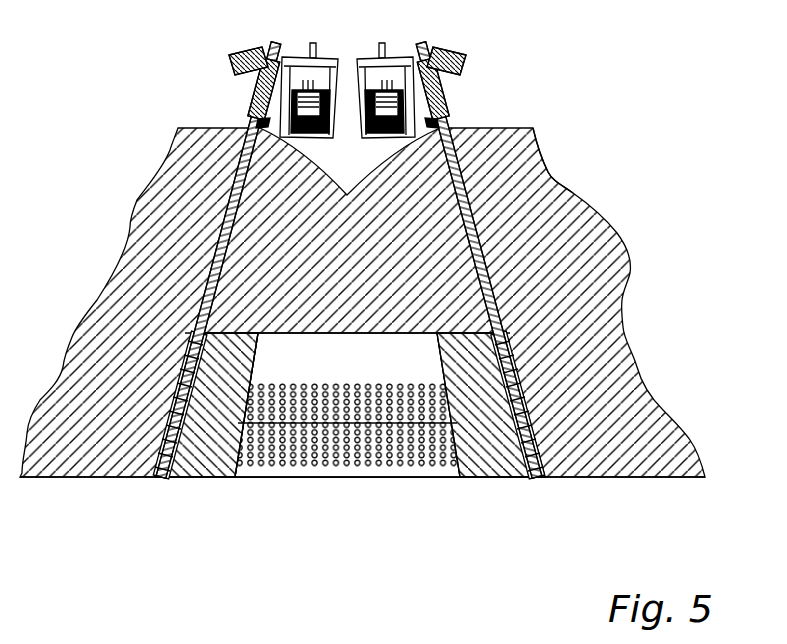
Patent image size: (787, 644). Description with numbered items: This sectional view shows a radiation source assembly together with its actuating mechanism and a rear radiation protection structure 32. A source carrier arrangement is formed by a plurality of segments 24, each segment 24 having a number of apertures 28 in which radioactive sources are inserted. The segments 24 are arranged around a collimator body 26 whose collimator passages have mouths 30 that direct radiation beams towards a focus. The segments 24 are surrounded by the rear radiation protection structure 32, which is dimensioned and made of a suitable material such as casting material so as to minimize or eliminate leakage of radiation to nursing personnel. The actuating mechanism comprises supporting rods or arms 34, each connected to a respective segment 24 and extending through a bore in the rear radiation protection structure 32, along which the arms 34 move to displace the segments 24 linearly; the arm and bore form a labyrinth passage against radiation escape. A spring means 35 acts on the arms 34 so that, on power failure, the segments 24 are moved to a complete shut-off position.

The segments 24 is at (157, 478).
The collimator body 26 is at (205, 453).
The apertures 28 is at (166, 421).
The mouths 30 is at (320, 470).
The rear radiation protection structure 32 is at (660, 462).
The supporting rods or arms 34 is at (547, 176).
The spring means 35 is at (364, 138).